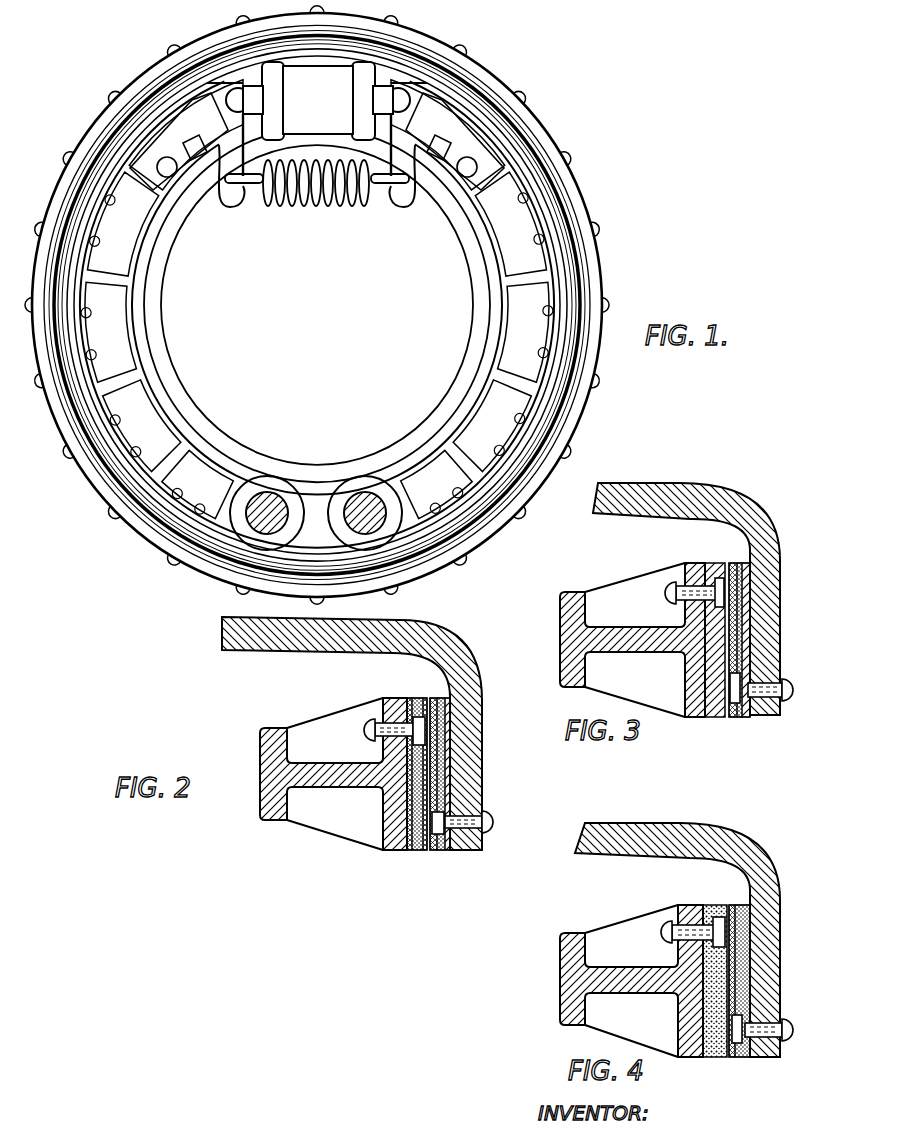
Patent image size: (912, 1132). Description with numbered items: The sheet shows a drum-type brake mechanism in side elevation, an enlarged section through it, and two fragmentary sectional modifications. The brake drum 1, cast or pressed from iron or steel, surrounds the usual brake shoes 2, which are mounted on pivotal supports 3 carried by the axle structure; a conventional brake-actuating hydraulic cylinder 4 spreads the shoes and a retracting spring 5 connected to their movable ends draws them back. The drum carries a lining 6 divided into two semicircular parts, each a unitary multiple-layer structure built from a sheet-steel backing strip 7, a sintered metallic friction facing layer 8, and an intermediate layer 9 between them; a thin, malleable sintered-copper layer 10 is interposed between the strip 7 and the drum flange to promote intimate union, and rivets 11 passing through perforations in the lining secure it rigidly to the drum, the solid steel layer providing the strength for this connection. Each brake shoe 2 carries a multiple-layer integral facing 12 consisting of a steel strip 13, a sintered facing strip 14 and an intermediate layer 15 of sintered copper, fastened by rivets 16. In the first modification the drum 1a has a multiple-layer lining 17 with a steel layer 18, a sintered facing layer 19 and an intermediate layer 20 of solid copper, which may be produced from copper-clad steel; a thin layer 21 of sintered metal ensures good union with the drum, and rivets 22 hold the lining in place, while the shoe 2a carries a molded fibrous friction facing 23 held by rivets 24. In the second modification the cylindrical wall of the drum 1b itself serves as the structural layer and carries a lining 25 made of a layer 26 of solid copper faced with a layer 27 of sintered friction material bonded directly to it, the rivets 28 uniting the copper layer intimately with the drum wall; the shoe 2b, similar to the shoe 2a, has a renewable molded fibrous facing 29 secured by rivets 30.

In FIG. 1, the brake drum 1 is at (530, 120).
In FIG. 2, the brake drum 1 is at (222, 636).
In FIG. 3, the brake drum 1a is at (720, 505).
In FIG. 4, the brake drum 1b is at (745, 846).
In FIG. 1, the brake shoes 2 is at (140, 323).
In FIG. 2, the brake shoes 2 is at (303, 730).
In FIG. 3, the brake shoe 2a is at (598, 595).
In FIG. 4, the brake shoe 2b is at (605, 935).
In FIG. 1, the pivotal supports 3 is at (268, 500).
In FIG. 1, the brake-actuating hydraulic cylinder 4 is at (318, 119).
In FIG. 1, the retracting spring 5 is at (320, 208).
In FIG. 1, the lining 6 is at (160, 95).
In FIG. 2, the lining 6 is at (440, 698).
In FIG. 2, the backing strip 7 is at (447, 852).
In FIG. 2, the friction facing layer 8 is at (433, 852).
In FIG. 2, the intermediate layer 9 is at (440, 852).
In FIG. 2, the thin metallic layer 10 is at (455, 774).
In FIG. 2, the rivets 11 is at (495, 824).
In FIG. 1, the multiple-layer integral facing 12 is at (172, 105).
In FIG. 2, the multiple-layer integral facing 12 is at (420, 698).
In FIG. 2, the steel strip 13 is at (410, 852).
In FIG. 2, the facing strip 14 is at (424, 852).
In FIG. 2, the intermediate layer 15 is at (414, 852).
In FIG. 2, the rivets 16 is at (368, 730).
In FIG. 3, the multiple-layer lining 17 is at (740, 562).
In FIG. 3, the steel layer 18 is at (744, 718).
In FIG. 3, the facing layer 19 is at (728, 718).
In FIG. 3, the intermediate layer 20 is at (735, 718).
In FIG. 3, the thin layer of sintered metal 21 is at (750, 625).
In FIG. 3, the rivets 22 is at (790, 692).
In FIG. 3, the friction facing 23 is at (716, 568).
In FIG. 3, the rivets 24 is at (668, 594).
In FIG. 4, the multiple-layer lining 25 is at (737, 903).
In FIG. 4, the layer of solid copper 26 is at (744, 1058).
In FIG. 4, the sintered friction layer 27 is at (732, 1058).
In FIG. 4, the rivets 28 is at (786, 1020).
In FIG. 4, the renewable facing 29 is at (710, 905).
In FIG. 4, the rivets 30 is at (667, 938).